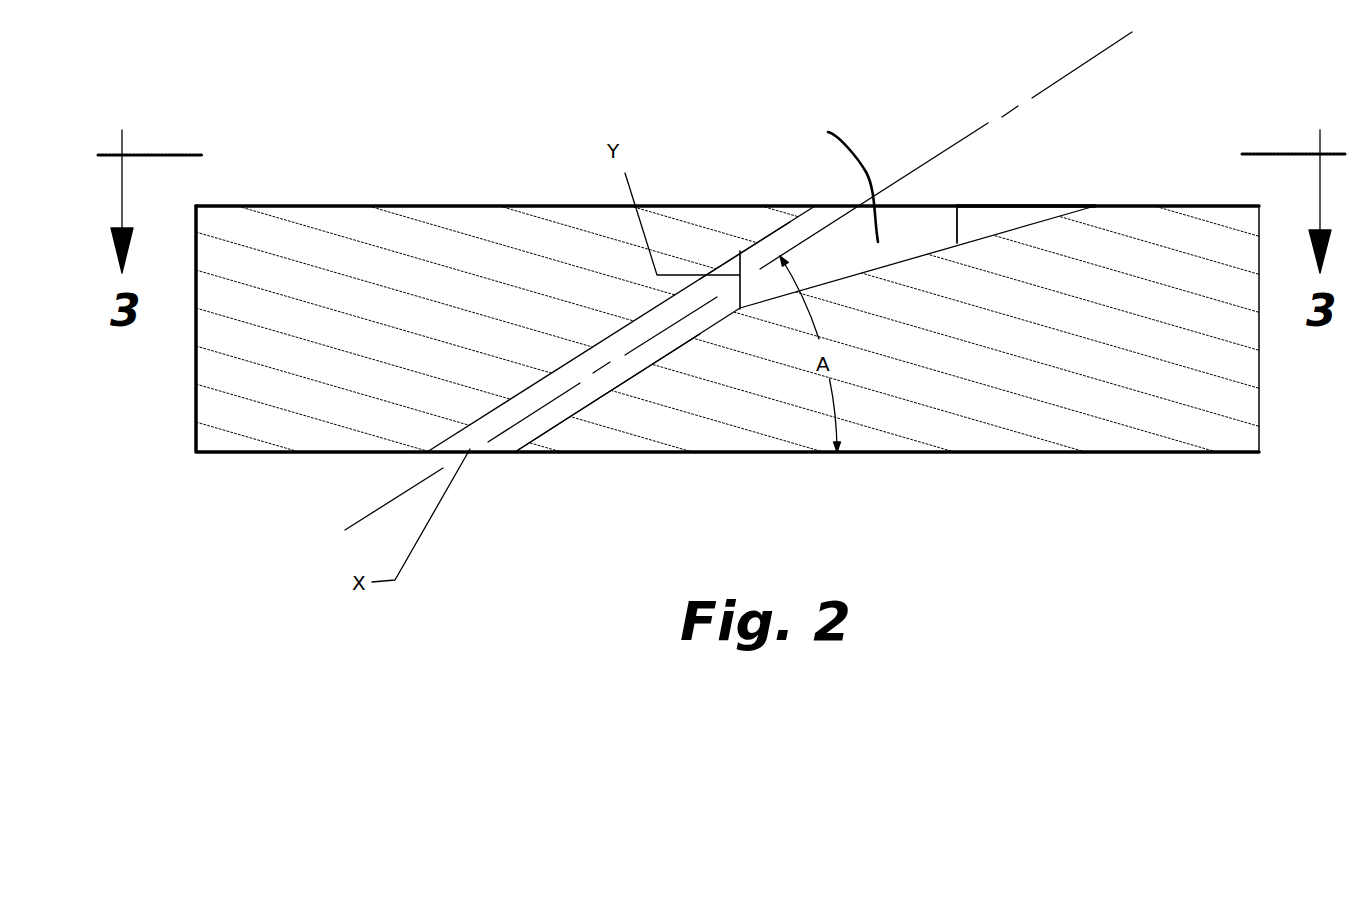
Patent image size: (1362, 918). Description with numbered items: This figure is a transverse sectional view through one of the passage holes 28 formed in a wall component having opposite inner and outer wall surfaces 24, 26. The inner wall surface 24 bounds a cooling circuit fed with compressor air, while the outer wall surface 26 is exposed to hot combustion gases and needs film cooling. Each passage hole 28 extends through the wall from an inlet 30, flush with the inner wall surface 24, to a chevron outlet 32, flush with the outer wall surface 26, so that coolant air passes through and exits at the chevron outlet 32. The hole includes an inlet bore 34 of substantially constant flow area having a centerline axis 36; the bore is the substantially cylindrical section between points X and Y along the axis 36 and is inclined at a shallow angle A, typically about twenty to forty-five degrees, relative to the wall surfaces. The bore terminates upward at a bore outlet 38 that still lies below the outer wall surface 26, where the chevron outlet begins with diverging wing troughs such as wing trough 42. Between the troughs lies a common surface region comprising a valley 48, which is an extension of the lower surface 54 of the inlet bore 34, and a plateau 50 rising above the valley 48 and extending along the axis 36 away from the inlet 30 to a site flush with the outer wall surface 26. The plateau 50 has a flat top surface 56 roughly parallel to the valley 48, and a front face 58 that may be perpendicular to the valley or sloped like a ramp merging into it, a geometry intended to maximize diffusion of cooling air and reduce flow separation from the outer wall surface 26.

The inner wall surface 24 is at (1005, 460).
The outer wall surface 26 is at (350, 198).
The passage hole 28 is at (474, 478).
The inlet 30 is at (465, 436).
The chevron outlet 32 is at (893, 228).
The inlet bore 34 is at (583, 398).
The centerline axis 36 is at (1098, 53).
The bore outlet 38 is at (754, 255).
The wing trough 42 is at (841, 174).
The valley 48 is at (860, 262).
The plateau 50 is at (993, 217).
The lower surface 54 is at (530, 431).
The top surface 56 is at (970, 195).
The front face 58 is at (945, 225).